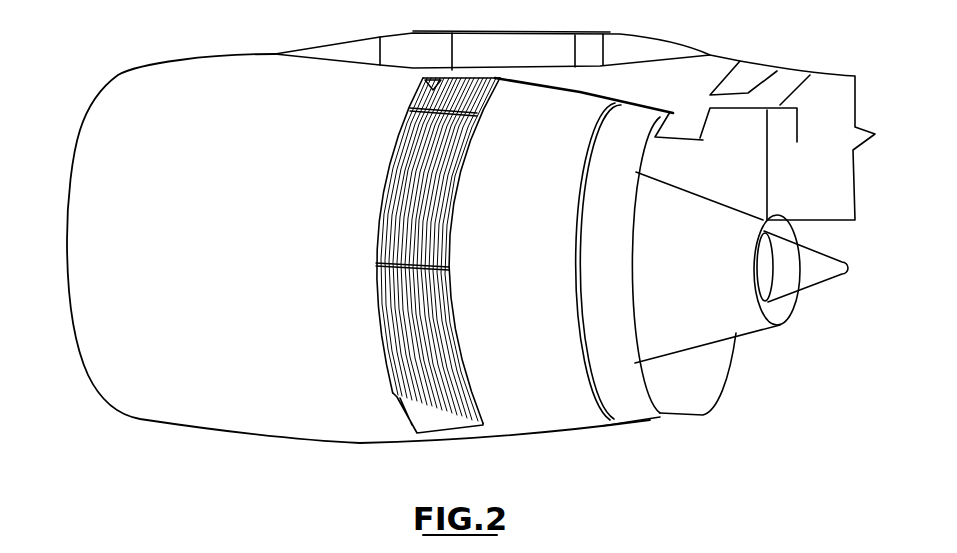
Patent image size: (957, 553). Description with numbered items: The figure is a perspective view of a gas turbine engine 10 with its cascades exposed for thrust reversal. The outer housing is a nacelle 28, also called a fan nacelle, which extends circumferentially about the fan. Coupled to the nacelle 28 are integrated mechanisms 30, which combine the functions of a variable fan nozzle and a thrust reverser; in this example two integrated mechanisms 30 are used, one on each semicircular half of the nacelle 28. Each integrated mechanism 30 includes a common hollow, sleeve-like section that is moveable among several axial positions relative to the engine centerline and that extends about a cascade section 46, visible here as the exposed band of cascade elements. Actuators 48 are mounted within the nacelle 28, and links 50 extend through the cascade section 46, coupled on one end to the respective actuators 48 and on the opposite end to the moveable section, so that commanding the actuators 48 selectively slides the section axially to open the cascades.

The gas turbine engine 10 is at (463, 275).
The nacelle 28 is at (258, 422).
The integrated mechanism 30 is at (405, 283).
The cascade section 46 is at (375, 266).
The actuators 48 is at (403, 117).
The links 50 is at (417, 100).